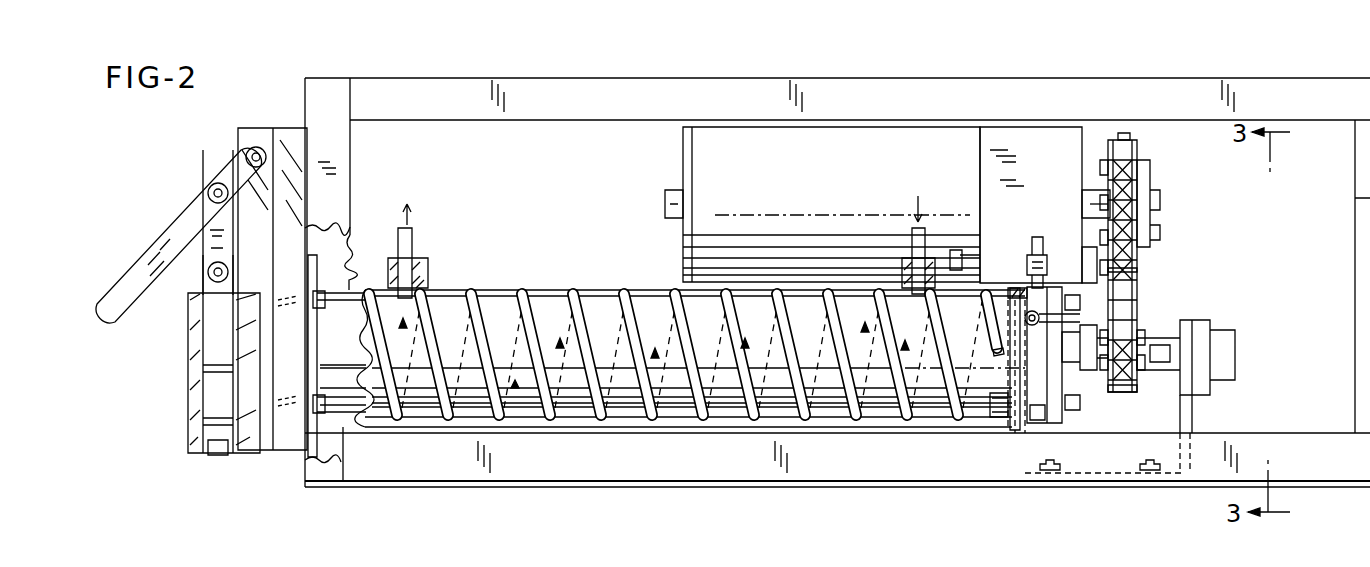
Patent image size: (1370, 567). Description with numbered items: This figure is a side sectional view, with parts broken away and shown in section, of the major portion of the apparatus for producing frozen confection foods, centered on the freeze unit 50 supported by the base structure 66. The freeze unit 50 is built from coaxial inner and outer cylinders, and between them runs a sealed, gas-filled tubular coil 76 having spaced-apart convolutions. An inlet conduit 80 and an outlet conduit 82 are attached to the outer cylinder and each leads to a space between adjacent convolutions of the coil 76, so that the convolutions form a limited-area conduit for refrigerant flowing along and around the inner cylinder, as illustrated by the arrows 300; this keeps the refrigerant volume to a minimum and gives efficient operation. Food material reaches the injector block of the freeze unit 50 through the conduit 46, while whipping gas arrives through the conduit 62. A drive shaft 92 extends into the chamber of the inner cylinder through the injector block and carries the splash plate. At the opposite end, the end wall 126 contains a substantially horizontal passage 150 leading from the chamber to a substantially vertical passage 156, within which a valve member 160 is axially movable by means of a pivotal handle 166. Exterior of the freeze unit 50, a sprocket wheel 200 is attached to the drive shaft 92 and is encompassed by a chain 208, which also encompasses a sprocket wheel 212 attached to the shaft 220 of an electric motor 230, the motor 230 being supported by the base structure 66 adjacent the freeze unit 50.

The conduit 46 is at (1036, 238).
The freeze unit 50 is at (491, 277).
The conduit 62 is at (1098, 318).
The base structure 66 is at (1134, 79).
The tubular coil 76 is at (648, 412).
The inlet conduit 80 is at (912, 240).
The outlet conduit 82 is at (412, 248).
The drive shaft 92 is at (1174, 324).
The end wall 126 is at (250, 170).
The horizontal passage 150 is at (248, 416).
The vertical passage 156 is at (217, 456).
The valve member 160 is at (212, 340).
The pivotal handle 166 is at (166, 244).
The sprocket wheel 200 is at (1122, 384).
The chain 208 is at (1140, 272).
The sprocket wheel 212 is at (1148, 190).
The shaft 220 is at (1110, 158).
The electric motor 230 is at (862, 166).
The arrows 300 is at (420, 356).